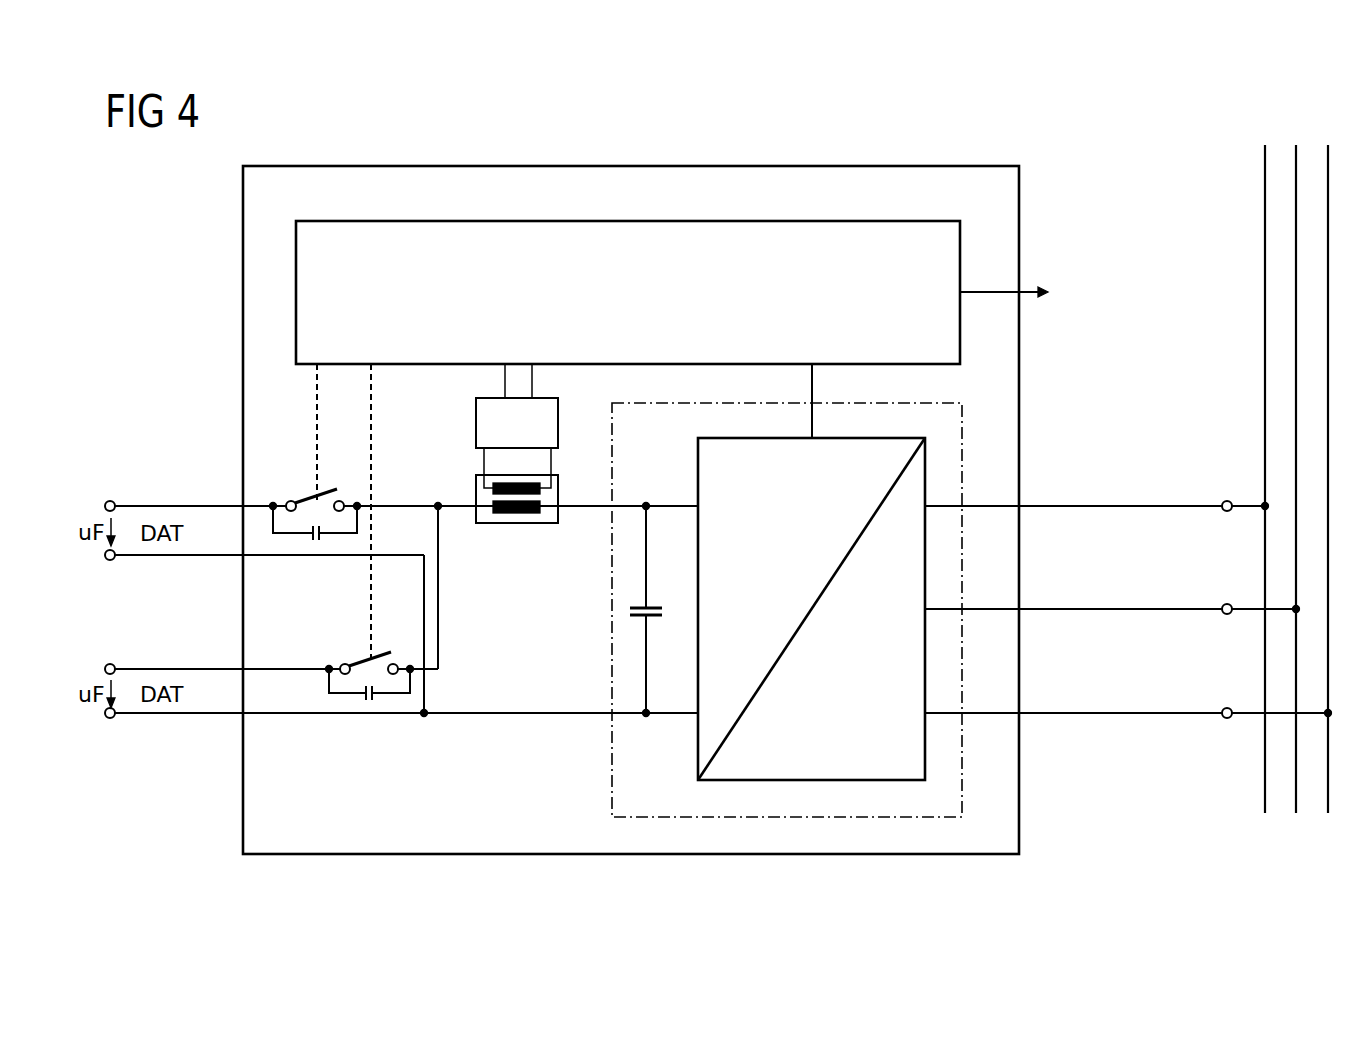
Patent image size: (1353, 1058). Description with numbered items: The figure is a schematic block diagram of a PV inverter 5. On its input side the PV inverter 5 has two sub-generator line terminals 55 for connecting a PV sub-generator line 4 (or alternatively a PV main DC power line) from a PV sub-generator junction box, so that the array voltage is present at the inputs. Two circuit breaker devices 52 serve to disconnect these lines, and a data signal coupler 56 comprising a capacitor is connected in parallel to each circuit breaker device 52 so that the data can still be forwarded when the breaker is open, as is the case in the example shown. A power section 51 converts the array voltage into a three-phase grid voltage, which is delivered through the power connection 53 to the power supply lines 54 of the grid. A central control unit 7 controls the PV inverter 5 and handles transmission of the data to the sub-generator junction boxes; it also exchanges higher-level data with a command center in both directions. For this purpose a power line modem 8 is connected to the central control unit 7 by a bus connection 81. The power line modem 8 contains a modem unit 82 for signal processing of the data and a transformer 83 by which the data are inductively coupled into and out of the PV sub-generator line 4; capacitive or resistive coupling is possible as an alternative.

The PV sub-generator line 4 is at (193, 554).
The PV inverter 5 is at (1019, 212).
The central control unit 7 is at (770, 221).
The power line modem 8 is at (499, 471).
The power section 51 is at (962, 437).
The circuit breaker device 52 is at (306, 492).
The power connection 53 is at (1227, 500).
The power supply lines 54 is at (1328, 285).
The sub-generator line terminals 55 is at (104, 500).
The data signal coupler 56 is at (310, 541).
The bus connection 81 is at (534, 374).
The modem unit 82 is at (476, 423).
The transformer 83 is at (535, 523).